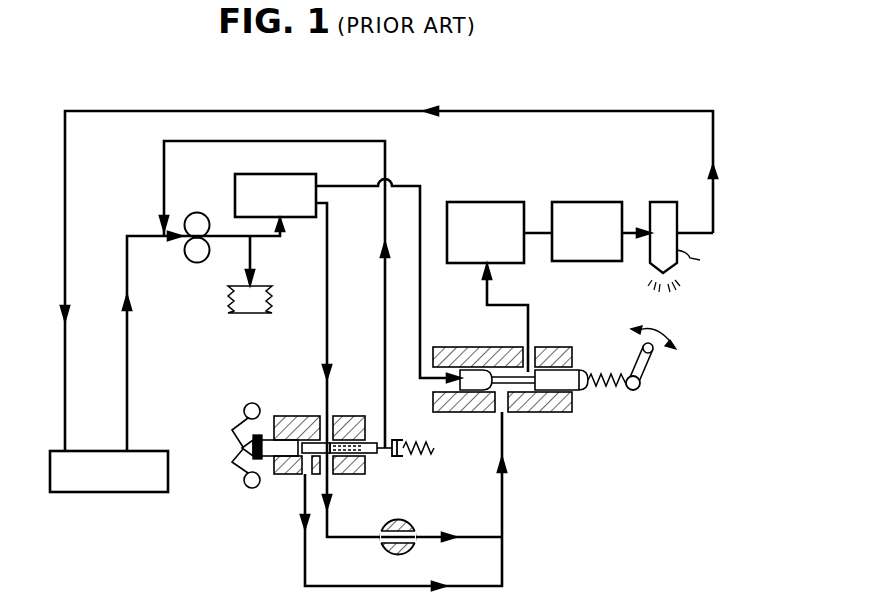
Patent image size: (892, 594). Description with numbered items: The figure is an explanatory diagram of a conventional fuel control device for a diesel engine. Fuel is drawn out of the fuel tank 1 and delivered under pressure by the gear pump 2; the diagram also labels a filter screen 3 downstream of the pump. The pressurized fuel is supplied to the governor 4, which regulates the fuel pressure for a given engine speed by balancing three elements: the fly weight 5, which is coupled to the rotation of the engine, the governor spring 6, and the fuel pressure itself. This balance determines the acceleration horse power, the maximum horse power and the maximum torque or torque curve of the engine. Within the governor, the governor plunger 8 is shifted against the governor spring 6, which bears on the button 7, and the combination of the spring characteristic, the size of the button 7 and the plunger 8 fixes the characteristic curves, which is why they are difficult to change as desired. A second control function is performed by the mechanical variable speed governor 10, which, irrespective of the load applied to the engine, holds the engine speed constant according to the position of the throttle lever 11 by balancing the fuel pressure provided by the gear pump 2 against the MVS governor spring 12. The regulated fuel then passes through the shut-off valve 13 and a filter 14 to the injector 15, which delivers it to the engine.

The fuel tank 1 is at (90, 494).
The gear pump 2 is at (194, 270).
The filter screen 3 is at (248, 173).
The governor 4 is at (303, 410).
The fly weight 5 is at (236, 405).
The governor spring 6 is at (420, 450).
The button 7 is at (398, 467).
The governor plunger 8 is at (270, 456).
The mechanical variable speed (MVS) governor 10 is at (538, 428).
The throttle lever 11 is at (647, 367).
The MVS governor spring 12 is at (604, 388).
The shut-off valve 13 is at (488, 201).
The filter 14 is at (584, 201).
The injector 15 is at (658, 201).